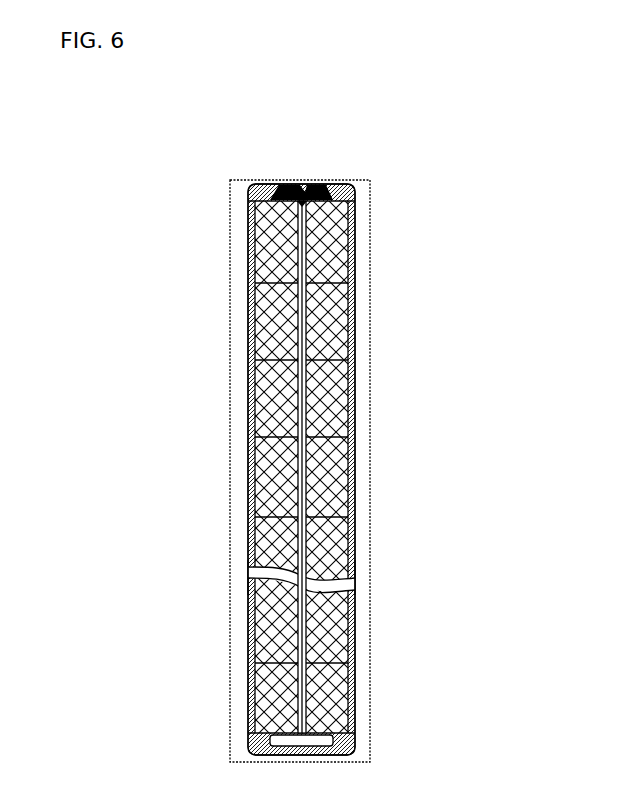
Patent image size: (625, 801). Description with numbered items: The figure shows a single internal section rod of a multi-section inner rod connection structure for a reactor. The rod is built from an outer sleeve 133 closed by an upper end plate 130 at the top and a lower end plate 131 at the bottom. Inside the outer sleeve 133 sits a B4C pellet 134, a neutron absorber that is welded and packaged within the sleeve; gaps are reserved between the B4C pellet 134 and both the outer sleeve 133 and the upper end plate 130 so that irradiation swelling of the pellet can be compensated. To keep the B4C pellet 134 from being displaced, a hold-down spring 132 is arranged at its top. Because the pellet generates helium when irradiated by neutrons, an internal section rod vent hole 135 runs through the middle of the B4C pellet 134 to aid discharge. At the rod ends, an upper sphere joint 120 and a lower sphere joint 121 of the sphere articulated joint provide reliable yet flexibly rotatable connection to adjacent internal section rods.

The upper sphere joint 120 is at (262, 469).
The lower sphere joint 121 is at (252, 162).
The upper end plate 130 is at (339, 163).
The lower end plate 131 is at (339, 717).
The hold-down spring 132 is at (363, 467).
The outer sleeve 133 is at (343, 473).
The B4C pellet 134 is at (343, 467).
The internal section rod vent hole 135 is at (339, 467).